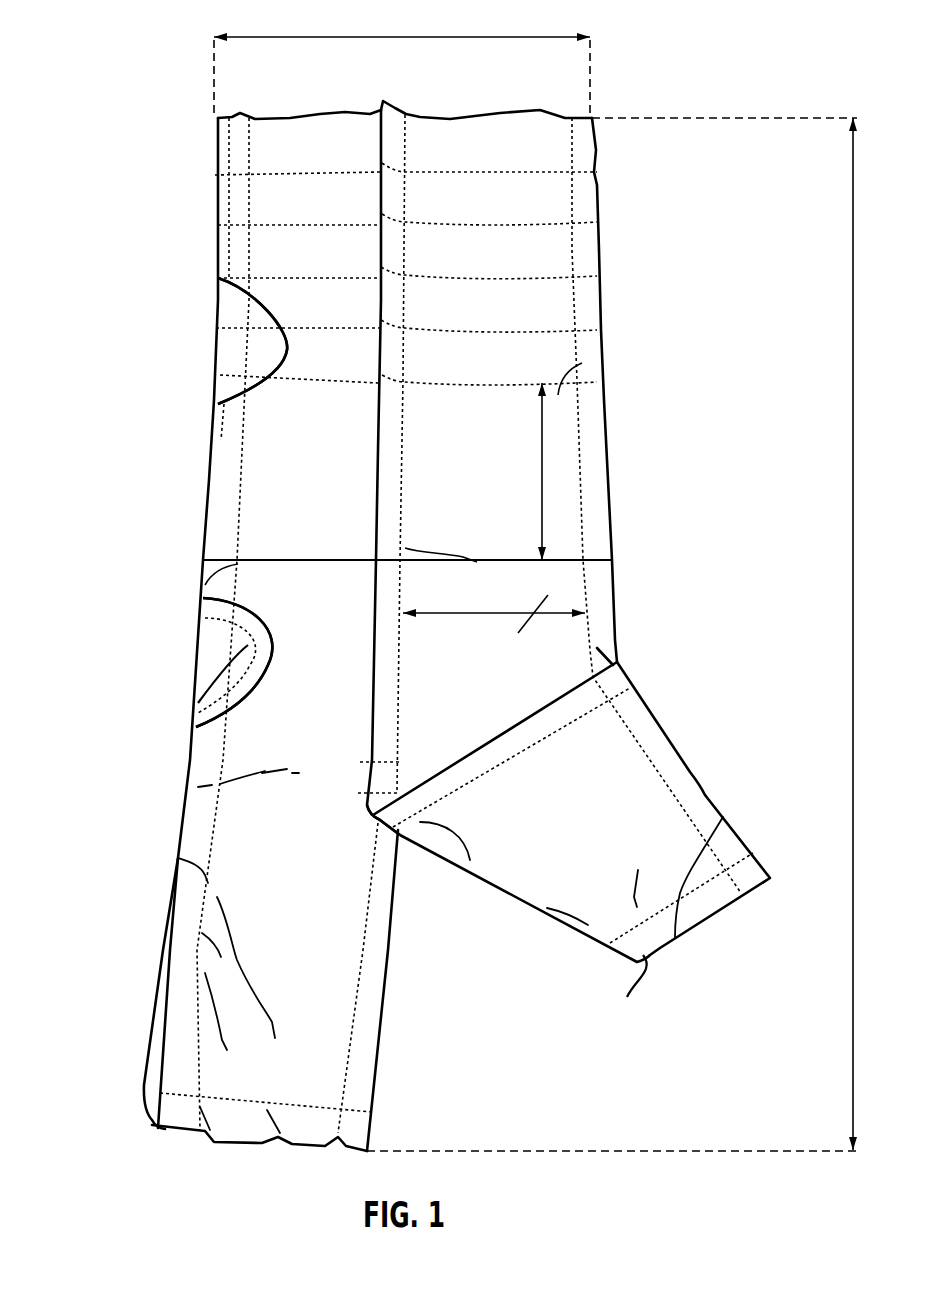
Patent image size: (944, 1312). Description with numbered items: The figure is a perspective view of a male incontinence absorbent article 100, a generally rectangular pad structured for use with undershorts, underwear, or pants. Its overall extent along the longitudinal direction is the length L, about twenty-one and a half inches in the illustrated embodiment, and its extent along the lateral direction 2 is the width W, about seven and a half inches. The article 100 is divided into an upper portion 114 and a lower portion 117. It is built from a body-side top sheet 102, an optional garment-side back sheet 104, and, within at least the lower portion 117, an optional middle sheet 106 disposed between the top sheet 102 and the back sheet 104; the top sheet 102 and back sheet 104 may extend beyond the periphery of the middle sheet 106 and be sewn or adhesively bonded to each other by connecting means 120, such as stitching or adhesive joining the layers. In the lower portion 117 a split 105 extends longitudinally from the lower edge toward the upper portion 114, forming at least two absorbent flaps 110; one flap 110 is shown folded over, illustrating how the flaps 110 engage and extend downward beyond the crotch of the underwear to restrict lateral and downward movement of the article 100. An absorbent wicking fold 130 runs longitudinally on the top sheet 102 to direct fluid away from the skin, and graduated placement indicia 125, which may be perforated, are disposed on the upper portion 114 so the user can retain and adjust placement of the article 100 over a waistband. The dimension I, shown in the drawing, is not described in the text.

The absorbent article 100 is at (124, 1028).
The top sheet 102 is at (200, 692).
The back sheet 104 is at (227, 332).
The split 105 is at (400, 835).
The middle sheet 106 is at (258, 298).
The absorbent flaps 110 is at (387, 998).
The upper portion 114 is at (340, 436).
The lower portion 117 is at (308, 857).
The connecting means 120 is at (408, 118).
The placement indicia 125 is at (245, 177).
The wicking fold 130 is at (378, 450).
The width W is at (403, 35).
The length L is at (852, 593).
The dimension I is at (543, 477).
The lateral direction 2 is at (503, 613).